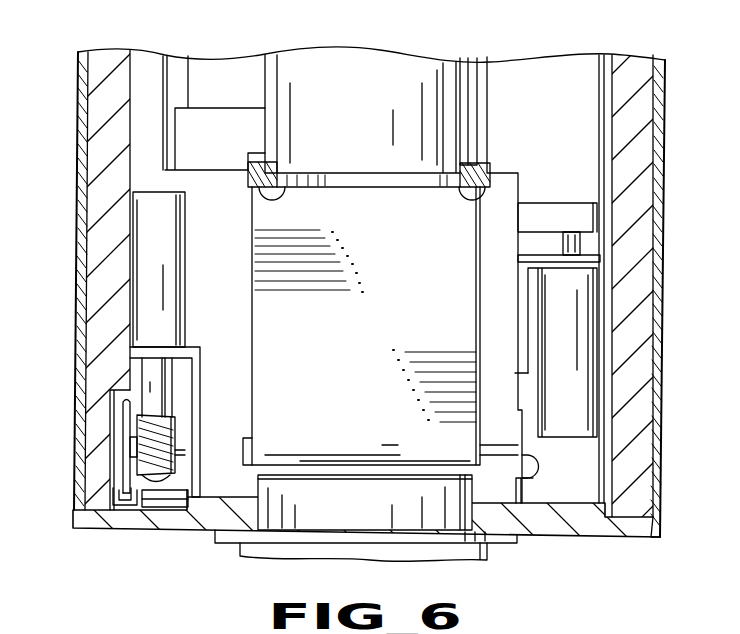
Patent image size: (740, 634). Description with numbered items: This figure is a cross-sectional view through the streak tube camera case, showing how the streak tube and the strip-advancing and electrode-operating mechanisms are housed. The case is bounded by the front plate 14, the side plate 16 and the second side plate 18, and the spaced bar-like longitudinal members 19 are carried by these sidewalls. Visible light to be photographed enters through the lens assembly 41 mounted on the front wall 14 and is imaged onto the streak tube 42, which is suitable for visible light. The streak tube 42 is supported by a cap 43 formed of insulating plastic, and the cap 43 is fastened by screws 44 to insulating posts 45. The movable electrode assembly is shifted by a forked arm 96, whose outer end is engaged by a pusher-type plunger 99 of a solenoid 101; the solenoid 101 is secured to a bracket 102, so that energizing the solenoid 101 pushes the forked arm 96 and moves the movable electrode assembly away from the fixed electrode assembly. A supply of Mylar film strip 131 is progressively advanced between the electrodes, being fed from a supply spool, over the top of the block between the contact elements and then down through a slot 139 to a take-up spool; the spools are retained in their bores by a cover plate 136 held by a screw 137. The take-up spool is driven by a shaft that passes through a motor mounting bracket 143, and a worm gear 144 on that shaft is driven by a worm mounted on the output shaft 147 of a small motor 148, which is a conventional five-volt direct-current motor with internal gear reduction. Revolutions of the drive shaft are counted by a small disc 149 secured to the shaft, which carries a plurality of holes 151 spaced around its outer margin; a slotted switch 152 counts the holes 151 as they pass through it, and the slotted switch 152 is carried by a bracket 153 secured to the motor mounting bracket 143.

The front plate 14 is at (584, 527).
The side plate 16 is at (667, 105).
The second side plate 18 is at (78, 90).
The bar-like longitudinal members 19 is at (108, 62).
The lens assembly 41 is at (516, 542).
The streak tube 42 is at (356, 82).
The cap 43 is at (483, 163).
The screws 44 is at (466, 193).
The insulating posts 45 is at (467, 110).
The forked arm 96 is at (587, 215).
The plunger 99 is at (580, 248).
The solenoid 101 is at (582, 347).
The bracket 102 is at (597, 262).
The strip 131 is at (378, 332).
The cover plate 136 is at (517, 497).
The screw 137 is at (535, 471).
The slot 139 is at (524, 446).
The motor mounting bracket 143 is at (197, 348).
The worm gear 144 is at (173, 422).
The output shaft 147 is at (152, 378).
The motor 148 is at (148, 220).
The disc 149 is at (127, 422).
The holes 151 is at (127, 487).
The slotted switch 152 is at (122, 510).
The bracket 153 is at (162, 508).